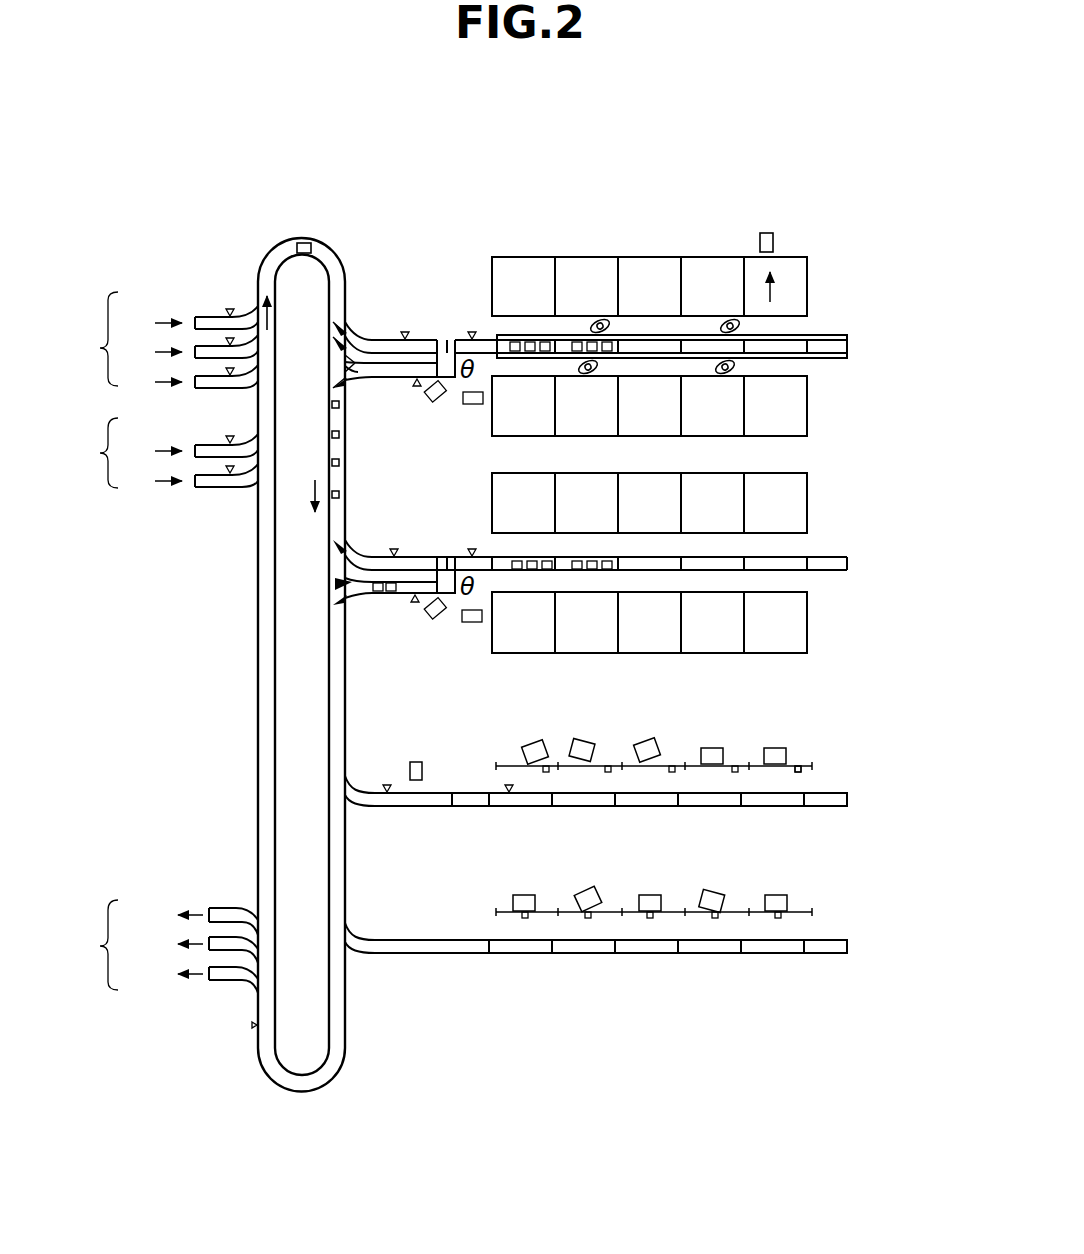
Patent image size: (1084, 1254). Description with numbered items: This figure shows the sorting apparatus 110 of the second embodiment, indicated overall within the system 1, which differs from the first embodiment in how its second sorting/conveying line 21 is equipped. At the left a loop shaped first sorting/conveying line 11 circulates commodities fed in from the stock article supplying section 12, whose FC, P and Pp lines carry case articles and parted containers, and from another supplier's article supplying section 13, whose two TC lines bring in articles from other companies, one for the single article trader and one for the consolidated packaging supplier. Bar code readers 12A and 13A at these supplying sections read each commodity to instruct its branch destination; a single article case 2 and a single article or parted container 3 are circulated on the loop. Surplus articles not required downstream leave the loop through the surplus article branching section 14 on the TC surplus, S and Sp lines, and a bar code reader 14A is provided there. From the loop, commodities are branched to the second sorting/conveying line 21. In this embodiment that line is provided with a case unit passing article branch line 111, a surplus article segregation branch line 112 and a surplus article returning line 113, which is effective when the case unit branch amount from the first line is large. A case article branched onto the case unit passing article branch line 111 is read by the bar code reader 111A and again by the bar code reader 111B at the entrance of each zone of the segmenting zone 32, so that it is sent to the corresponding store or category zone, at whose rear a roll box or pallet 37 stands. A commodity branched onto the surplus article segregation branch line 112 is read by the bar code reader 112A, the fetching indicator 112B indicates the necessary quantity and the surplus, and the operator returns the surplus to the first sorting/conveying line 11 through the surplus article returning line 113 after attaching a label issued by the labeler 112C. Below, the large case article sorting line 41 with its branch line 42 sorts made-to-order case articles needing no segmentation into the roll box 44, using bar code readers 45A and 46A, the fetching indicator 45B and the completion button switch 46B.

The sorting system 1 is at (402, 203).
The single article case 2 is at (302, 254).
The single article or parted container 3 is at (331, 435).
The first sorting/conveying line 11 is at (273, 243).
The stock article supplying section 12 is at (159, 340).
The bar code reader 12A is at (230, 306).
The another supplier's article supplying section 13 is at (159, 453).
The bar code reader 13A is at (228, 433).
The surplus article branching section 14 is at (158, 946).
The bar code reader 14A is at (250, 1025).
The second sorting/conveying line 21 is at (836, 315).
The segmenting zone 32 is at (617, 250).
The roll box or pallet 37 is at (766, 232).
The large case article sorting line 41 is at (826, 757).
The branch line 42 is at (835, 798).
The roll box 44 is at (780, 748).
The bar code reader 45A is at (387, 783).
The fetching indicator 45B is at (416, 760).
The bar code reader 46A is at (509, 783).
The completion button switch 46B is at (802, 772).
The sorting apparatus 110 is at (307, 195).
The case unit passing article branch line 111 is at (362, 334).
The bar code reader 111A is at (405, 330).
The bar code reader 111B is at (472, 330).
The surplus article segregation branch line 112 is at (388, 362).
The bar code reader 112A is at (417, 388).
The fetching indicator 112B is at (445, 400).
The labeler 112C is at (483, 400).
The surplus article returning line 113 is at (365, 376).